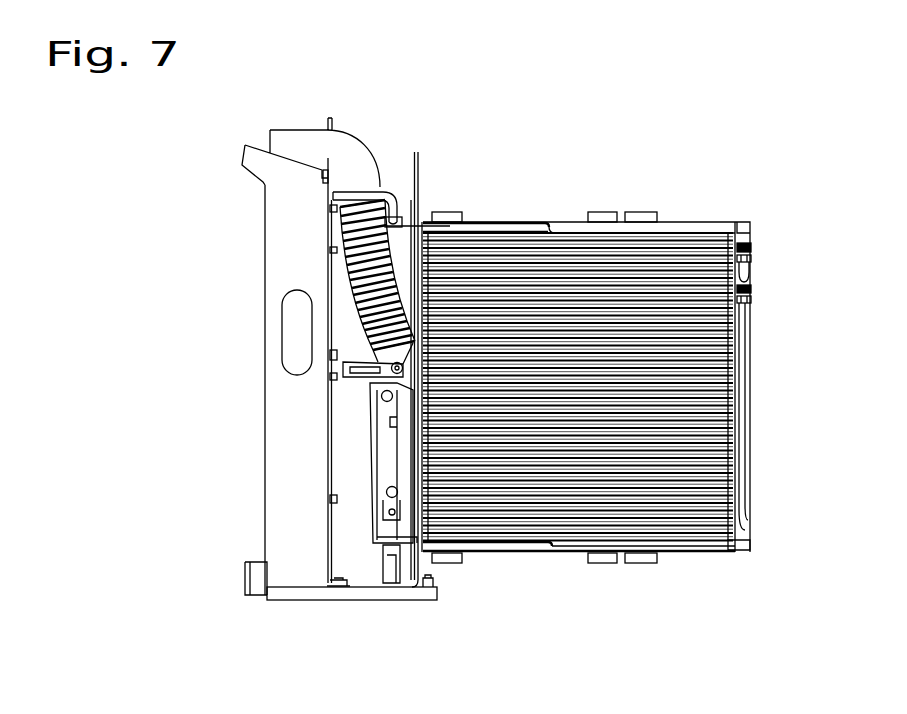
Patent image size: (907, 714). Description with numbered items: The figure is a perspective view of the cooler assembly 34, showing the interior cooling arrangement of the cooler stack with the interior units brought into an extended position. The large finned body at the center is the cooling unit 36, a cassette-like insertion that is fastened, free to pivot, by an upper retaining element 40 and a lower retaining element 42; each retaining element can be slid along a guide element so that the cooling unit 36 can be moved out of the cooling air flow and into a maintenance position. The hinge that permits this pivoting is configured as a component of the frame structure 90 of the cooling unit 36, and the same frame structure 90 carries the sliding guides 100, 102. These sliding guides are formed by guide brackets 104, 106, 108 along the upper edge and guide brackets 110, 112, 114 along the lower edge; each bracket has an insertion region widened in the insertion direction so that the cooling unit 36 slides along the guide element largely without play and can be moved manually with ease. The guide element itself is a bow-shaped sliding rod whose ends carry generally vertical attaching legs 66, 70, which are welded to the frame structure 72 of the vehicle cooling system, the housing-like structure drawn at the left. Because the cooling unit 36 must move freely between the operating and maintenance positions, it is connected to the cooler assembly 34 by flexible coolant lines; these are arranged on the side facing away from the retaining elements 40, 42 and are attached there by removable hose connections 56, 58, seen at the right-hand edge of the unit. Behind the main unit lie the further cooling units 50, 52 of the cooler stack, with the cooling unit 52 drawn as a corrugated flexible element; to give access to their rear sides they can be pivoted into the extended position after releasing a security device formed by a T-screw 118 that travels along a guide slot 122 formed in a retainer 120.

The cooler assembly 34 is at (642, 346).
The cooling unit 36 is at (680, 446).
The upper retaining element 40 is at (410, 198).
The lower retaining element 42 is at (368, 566).
The further cooling unit 50 is at (380, 484).
The further cooling unit 52 is at (345, 258).
The hose connection 56 is at (752, 244).
The hose connection 58 is at (752, 289).
The attaching leg 66 is at (377, 182).
The attaching leg 70 is at (393, 575).
The frame structure 72 is at (273, 347).
The frame structure 90 is at (698, 222).
The sliding guide 100 is at (634, 346).
The sliding guide 102 is at (544, 590).
The guide bracket 104 is at (458, 212).
The guide bracket 106 is at (608, 212).
The guide bracket 108 is at (652, 212).
The guide bracket 110 is at (453, 565).
The guide bracket 112 is at (597, 564).
The guide bracket 114 is at (643, 564).
The T-screw 118 is at (378, 455).
The retainer 120 is at (343, 370).
The guide slot 122 is at (382, 398).